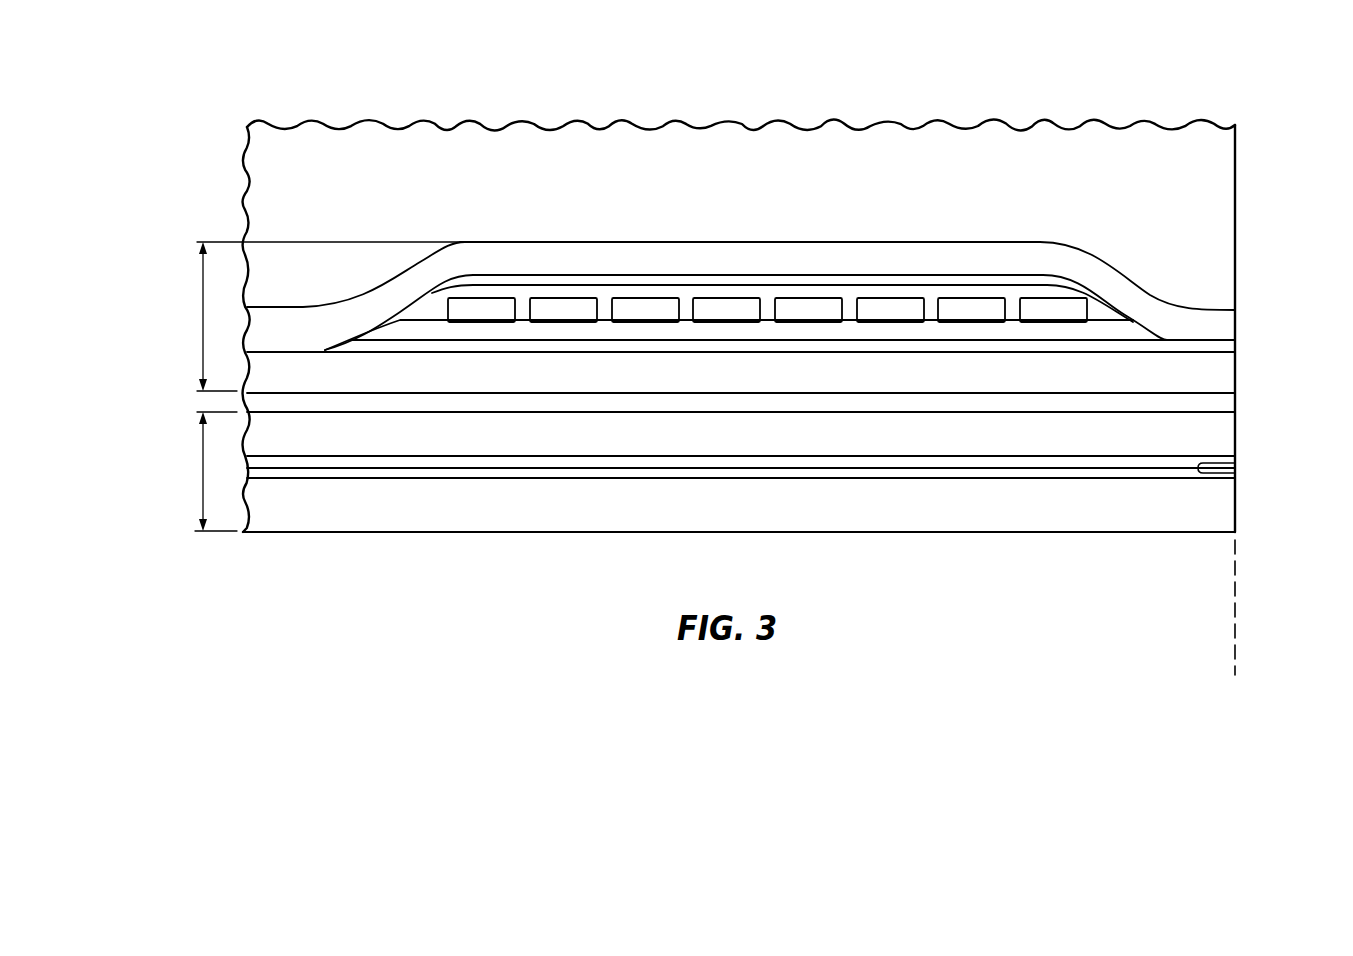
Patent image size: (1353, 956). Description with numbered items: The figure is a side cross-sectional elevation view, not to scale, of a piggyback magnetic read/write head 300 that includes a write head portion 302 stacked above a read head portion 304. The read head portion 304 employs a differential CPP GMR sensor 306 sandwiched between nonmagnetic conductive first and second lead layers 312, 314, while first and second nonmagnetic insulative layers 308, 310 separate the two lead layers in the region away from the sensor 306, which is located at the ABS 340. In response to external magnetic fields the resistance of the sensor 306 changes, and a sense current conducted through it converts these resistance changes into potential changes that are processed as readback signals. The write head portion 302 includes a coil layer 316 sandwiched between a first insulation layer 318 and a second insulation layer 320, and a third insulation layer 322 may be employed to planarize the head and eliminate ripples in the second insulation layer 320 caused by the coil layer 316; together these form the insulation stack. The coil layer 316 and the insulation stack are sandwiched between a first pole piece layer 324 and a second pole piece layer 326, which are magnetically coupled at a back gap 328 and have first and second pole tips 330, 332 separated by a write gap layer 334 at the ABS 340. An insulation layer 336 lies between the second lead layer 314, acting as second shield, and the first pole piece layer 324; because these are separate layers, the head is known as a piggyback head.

The magnetic read/write head 300 is at (227, 97).
The write head portion 302 is at (201, 316).
The read head portion 304 is at (200, 476).
The differential CPP GMR sensor 306 is at (1235, 470).
The first nonmagnetic insulative layer 308 is at (812, 480).
The second nonmagnetic insulative layer 310 is at (792, 455).
The first lead layer 312 is at (1110, 524).
The second lead layer 314 is at (1127, 447).
The coil layer 316 is at (721, 303).
The first insulation layer 318 is at (602, 330).
The second insulation layer 320 is at (1105, 310).
The third insulation layer 322 is at (535, 277).
The first pole piece layer 324 is at (1127, 386).
The second pole piece layer 326 is at (944, 247).
The back gap 328 is at (279, 350).
The first pole tip 330 is at (1235, 374).
The second pole tip 332 is at (1235, 325).
The write gap layer 334 is at (1235, 348).
The insulation layer 336 is at (1235, 403).
The ABS 340 is at (1235, 652).